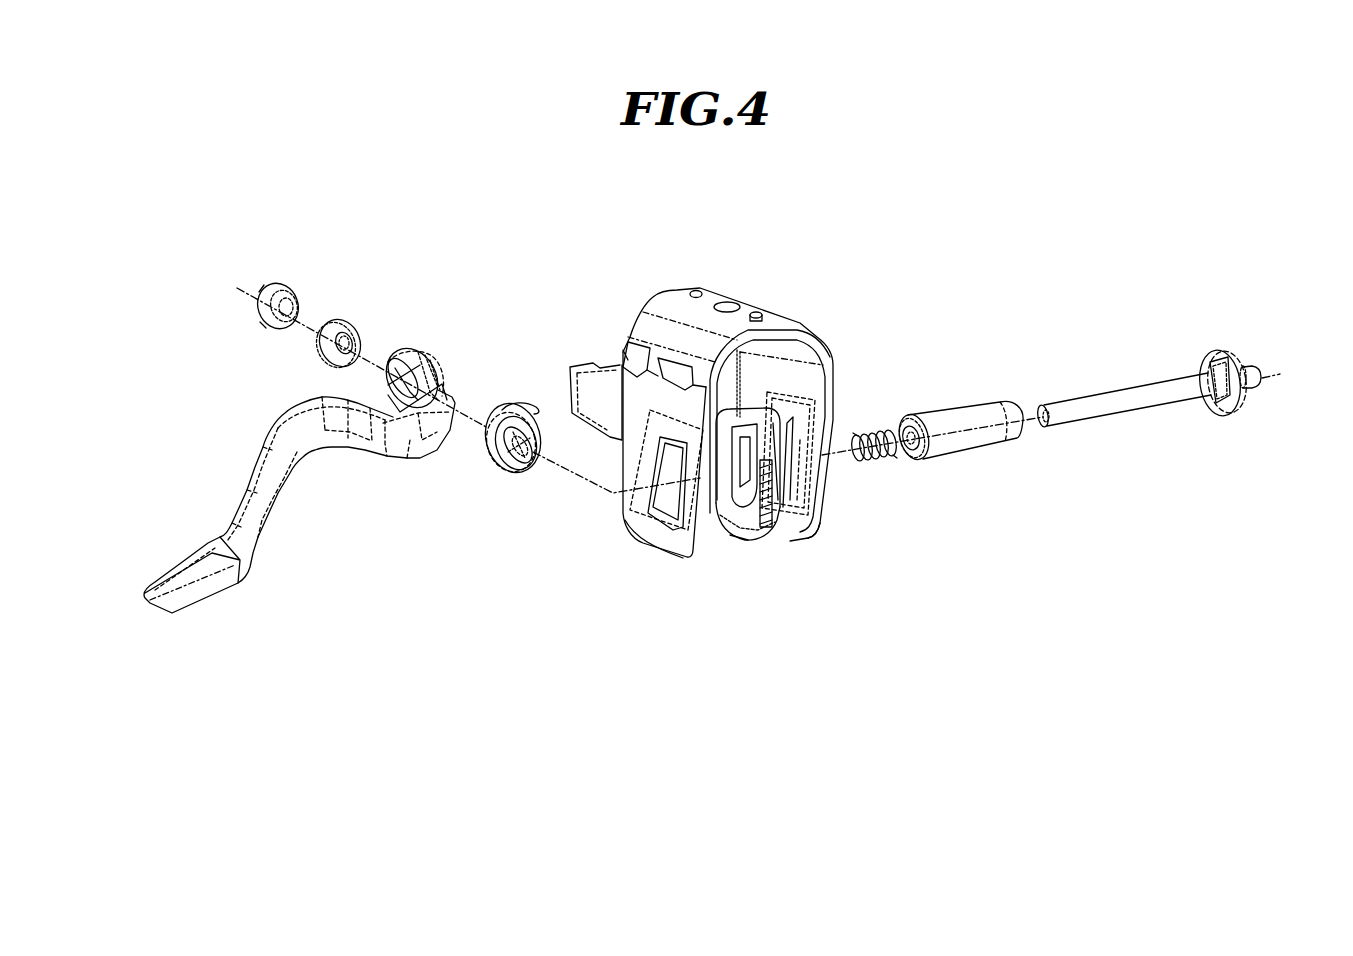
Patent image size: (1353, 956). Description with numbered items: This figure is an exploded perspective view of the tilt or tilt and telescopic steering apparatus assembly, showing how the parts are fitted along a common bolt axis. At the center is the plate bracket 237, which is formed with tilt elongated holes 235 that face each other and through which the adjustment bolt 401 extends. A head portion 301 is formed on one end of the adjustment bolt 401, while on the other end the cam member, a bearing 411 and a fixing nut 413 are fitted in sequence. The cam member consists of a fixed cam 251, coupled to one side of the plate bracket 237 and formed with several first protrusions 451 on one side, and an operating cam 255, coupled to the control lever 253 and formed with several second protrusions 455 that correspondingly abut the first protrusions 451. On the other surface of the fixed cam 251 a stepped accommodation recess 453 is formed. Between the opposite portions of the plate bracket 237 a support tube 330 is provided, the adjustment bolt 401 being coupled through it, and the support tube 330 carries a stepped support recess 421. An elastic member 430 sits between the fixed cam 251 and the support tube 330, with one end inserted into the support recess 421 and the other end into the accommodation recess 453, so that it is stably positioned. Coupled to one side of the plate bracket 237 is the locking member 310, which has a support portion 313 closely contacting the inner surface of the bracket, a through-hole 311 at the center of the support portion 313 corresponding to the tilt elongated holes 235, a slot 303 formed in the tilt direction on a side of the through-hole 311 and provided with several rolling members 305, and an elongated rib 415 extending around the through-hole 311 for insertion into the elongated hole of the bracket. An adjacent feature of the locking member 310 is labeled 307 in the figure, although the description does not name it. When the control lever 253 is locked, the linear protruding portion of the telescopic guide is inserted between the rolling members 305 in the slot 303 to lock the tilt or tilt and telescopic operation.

The fixed cam 251 is at (487, 468).
The control lever 253 is at (258, 478).
The operating cam 255 is at (413, 356).
The tilt elongated holes 235 is at (650, 522).
The plate bracket 237 is at (658, 553).
The head portion 301 is at (1222, 417).
The slot 303 is at (742, 540).
The rolling members 305 is at (765, 503).
The clip lower corner 307 is at (760, 548).
The locking member 310 is at (729, 459).
The through-hole 311 is at (742, 415).
The support portion 313 is at (750, 545).
The support tube 330 is at (949, 385).
The adjustment bolt 401 is at (1148, 369).
The bearing 411 is at (345, 319).
The fixing nut 413 is at (280, 288).
The elongated rib 415 is at (768, 458).
The support recess 421 is at (905, 428).
The elastic member 430 is at (885, 468).
The first protrusions 451 is at (497, 420).
The accommodation recess 453 is at (522, 467).
The second protrusions 455 is at (426, 362).